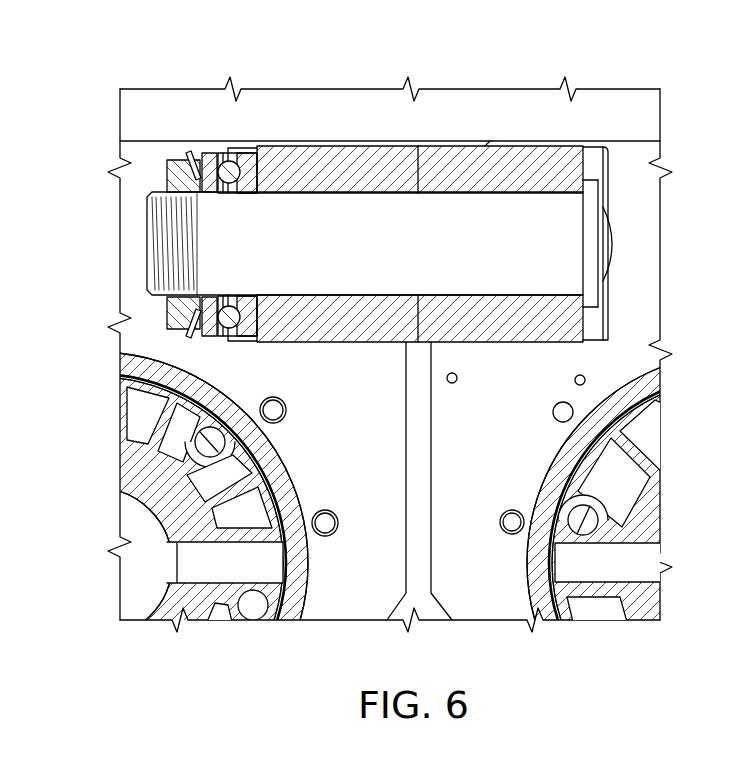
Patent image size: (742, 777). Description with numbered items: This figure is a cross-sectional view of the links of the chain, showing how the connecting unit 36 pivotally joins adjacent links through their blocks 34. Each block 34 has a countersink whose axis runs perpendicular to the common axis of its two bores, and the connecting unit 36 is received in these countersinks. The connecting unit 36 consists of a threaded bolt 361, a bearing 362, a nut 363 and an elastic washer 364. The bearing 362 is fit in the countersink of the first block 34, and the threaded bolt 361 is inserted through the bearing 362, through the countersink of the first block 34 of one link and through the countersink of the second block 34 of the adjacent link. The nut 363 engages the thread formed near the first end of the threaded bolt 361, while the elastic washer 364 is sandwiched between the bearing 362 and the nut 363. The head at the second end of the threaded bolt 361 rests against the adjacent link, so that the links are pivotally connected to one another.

The block 34 is at (327, 162).
The connecting unit 36 is at (491, 292).
The threaded bolt 361 is at (565, 213).
The bearing 362 is at (227, 313).
The nut 363 is at (175, 178).
The elastic washer 364 is at (190, 152).